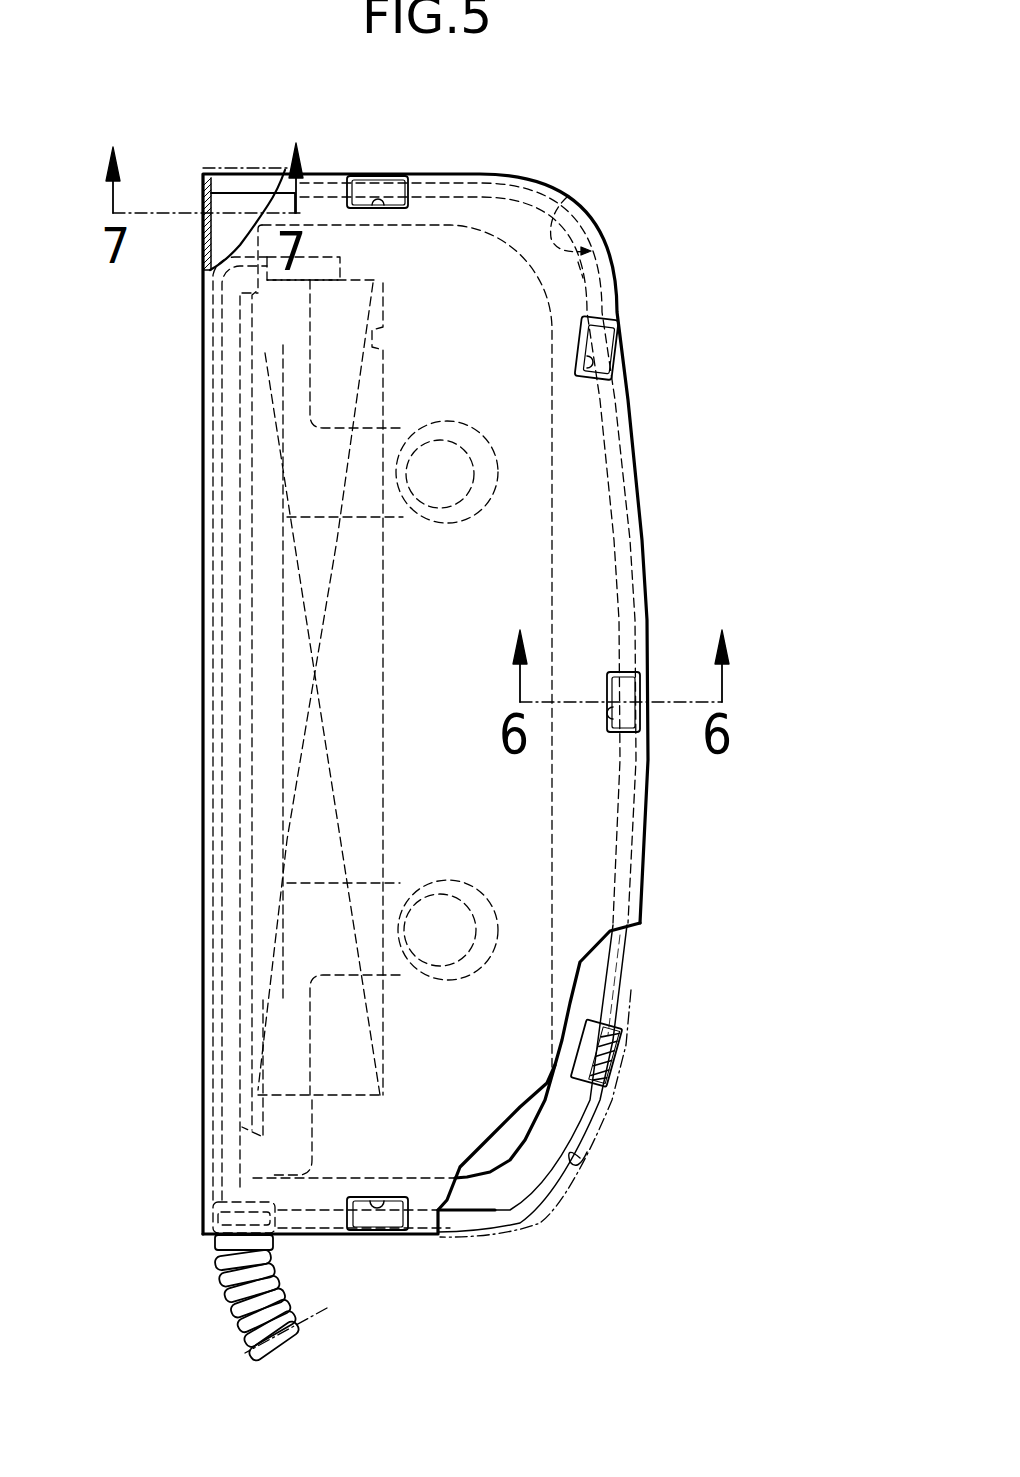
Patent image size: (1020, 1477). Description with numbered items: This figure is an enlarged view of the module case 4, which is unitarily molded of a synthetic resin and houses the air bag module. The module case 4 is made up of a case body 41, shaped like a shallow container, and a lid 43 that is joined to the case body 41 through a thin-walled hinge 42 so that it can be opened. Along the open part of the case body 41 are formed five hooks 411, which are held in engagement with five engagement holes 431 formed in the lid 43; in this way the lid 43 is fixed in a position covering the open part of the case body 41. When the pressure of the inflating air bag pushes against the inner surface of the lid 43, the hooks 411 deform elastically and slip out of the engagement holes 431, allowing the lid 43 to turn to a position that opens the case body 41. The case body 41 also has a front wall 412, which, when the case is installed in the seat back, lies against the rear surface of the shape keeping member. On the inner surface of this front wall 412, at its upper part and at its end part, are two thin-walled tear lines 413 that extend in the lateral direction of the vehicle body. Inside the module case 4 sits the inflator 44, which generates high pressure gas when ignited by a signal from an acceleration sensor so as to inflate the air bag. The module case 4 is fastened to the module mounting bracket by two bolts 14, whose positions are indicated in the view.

The module case 4 is at (662, 473).
The bolt 14 is at (445, 445).
The case body 41 is at (523, 1227).
The hook 411 is at (375, 1257).
The front wall 412 is at (612, 985).
The tear line 413 is at (567, 197).
The thin-walled hinge 42 is at (210, 240).
The lid 43 is at (585, 572).
The engagement hole 431 is at (380, 207).
The inflator 44 is at (370, 627).